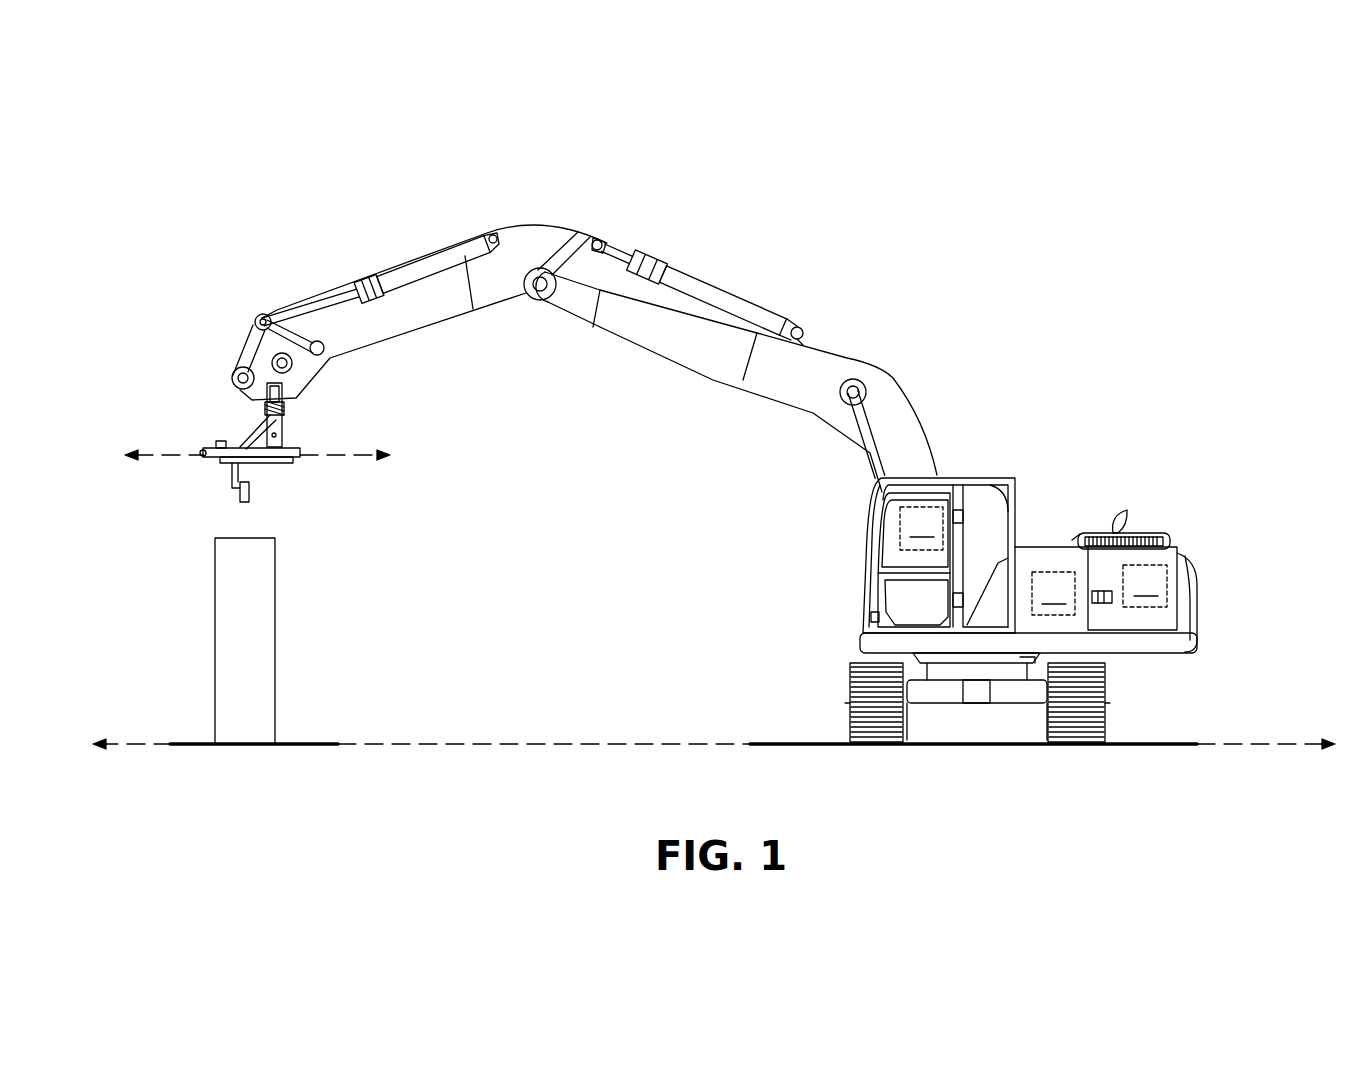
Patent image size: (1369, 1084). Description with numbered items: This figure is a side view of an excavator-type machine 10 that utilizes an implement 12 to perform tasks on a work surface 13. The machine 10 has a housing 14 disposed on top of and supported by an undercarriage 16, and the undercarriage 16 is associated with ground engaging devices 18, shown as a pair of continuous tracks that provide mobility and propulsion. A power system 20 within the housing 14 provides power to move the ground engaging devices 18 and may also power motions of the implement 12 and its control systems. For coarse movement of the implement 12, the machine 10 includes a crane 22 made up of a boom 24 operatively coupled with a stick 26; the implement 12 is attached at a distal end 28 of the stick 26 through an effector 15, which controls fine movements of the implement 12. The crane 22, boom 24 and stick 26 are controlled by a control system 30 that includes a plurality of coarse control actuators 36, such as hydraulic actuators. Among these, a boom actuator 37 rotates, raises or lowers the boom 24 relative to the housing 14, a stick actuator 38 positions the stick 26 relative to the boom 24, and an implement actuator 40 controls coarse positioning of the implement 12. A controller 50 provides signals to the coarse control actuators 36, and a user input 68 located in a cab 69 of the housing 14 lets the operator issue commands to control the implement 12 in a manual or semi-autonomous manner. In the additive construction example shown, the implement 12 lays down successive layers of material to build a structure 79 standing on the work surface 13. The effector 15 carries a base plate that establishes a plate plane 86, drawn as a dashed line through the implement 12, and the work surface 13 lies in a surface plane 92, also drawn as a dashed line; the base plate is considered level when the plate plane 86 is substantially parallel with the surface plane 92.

The machine 10 is at (948, 290).
The implement 12 is at (236, 495).
The work surface 13 is at (300, 745).
The housing 14 is at (948, 522).
The effector 15 is at (230, 442).
The undercarriage 16 is at (978, 724).
The ground engaging devices 18 is at (853, 668).
The power system 20 is at (1145, 586).
The crane 22 is at (548, 318).
The boom 24 is at (717, 378).
The stick 26 is at (423, 333).
The distal end 28 is at (264, 316).
The control system 30 is at (540, 197).
The coarse control actuators 36 is at (605, 350).
The boom actuator 37 is at (858, 447).
The stick actuator 38 is at (688, 272).
The implement actuator 40 is at (427, 258).
The controller 50 is at (1053, 593).
The user input 68 is at (921, 528).
The cab 69 is at (878, 520).
The structure 79 is at (247, 575).
The plate plane 86 is at (327, 450).
The surface plane 92 is at (530, 745).